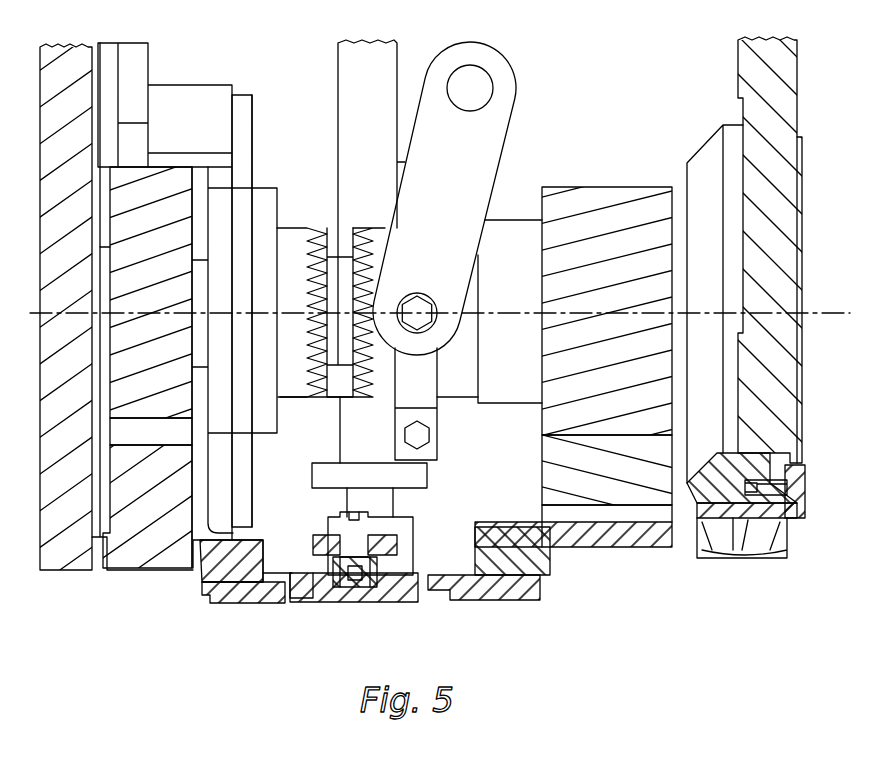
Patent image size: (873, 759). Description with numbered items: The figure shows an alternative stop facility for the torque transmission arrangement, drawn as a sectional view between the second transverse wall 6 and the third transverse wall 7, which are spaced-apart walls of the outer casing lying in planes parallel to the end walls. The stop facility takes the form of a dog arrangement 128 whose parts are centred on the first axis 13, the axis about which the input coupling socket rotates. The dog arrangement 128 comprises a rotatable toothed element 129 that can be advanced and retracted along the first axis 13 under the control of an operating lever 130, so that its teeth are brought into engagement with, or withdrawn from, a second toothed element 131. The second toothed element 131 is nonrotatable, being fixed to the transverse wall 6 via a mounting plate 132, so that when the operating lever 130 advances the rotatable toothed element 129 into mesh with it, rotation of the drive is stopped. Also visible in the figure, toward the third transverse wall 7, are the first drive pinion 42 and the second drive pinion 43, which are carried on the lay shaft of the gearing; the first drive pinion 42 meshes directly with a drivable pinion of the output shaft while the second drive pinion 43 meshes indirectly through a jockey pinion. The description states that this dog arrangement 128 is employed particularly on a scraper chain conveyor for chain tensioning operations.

The second transverse wall 6 is at (63, 72).
The third transverse wall 7 is at (760, 77).
The first axis 13 is at (502, 313).
The first drive pinion 42 is at (172, 195).
The second drive pinion 43 is at (613, 213).
The dog arrangement 128 is at (331, 221).
The rotatable toothed element 129 is at (382, 240).
The operating lever 130 is at (470, 200).
The second toothed element 131 is at (292, 373).
The mounting plate 132 is at (173, 292).